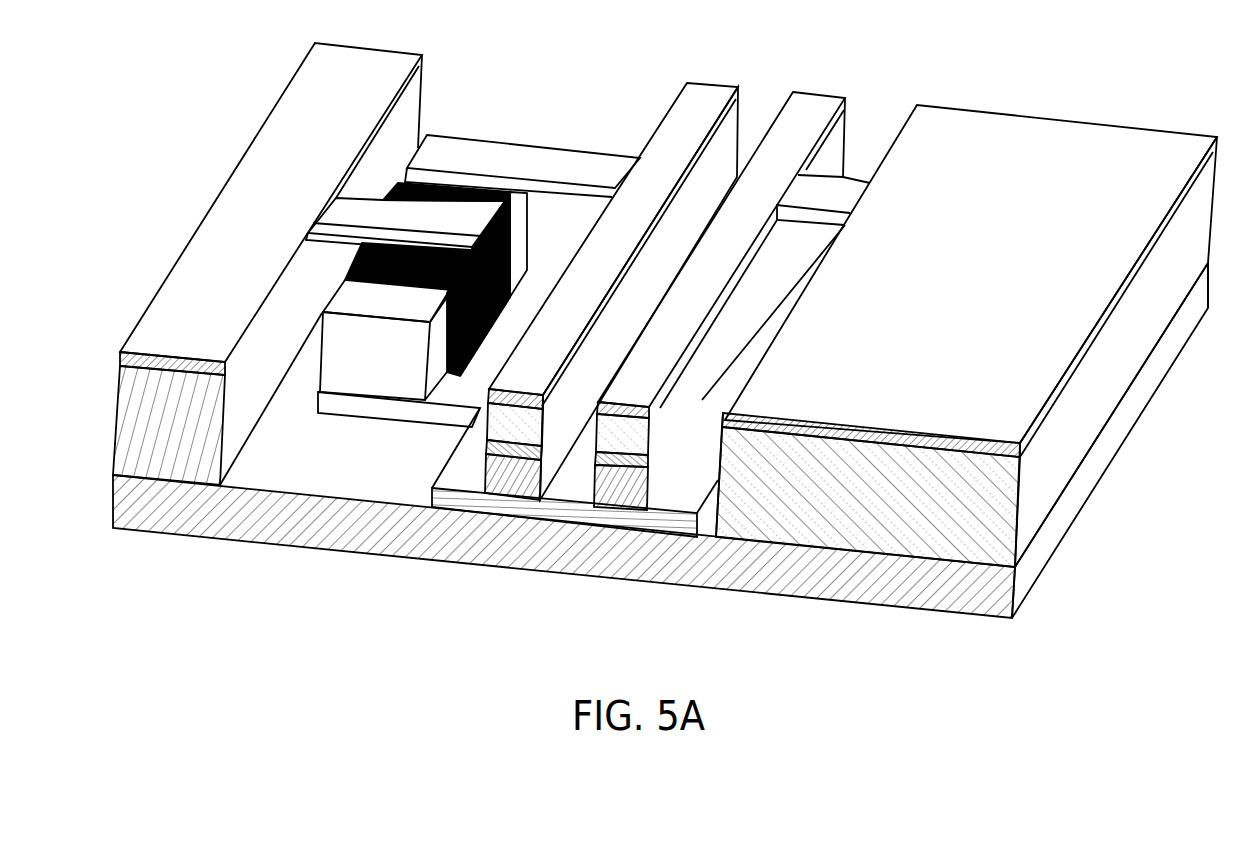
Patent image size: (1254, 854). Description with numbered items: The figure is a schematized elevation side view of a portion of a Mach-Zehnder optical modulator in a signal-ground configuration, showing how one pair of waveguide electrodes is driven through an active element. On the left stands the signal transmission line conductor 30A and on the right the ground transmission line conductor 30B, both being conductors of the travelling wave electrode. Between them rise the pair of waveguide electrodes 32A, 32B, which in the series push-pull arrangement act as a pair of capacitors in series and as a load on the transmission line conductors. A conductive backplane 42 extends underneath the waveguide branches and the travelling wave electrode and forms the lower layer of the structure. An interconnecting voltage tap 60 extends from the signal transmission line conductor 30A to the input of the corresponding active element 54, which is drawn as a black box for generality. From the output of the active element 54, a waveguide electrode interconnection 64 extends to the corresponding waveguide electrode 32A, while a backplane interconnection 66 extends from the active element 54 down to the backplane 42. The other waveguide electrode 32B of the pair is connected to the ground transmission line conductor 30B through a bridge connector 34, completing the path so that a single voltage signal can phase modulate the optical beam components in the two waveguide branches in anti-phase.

The signal transmission line conductor 30A is at (268, 114).
The ground transmission line conductor 30B is at (1100, 123).
The waveguide electrode 32A is at (712, 82).
The waveguide electrode 32B is at (820, 90).
The bridge connector 34 is at (862, 180).
The conductive backplane 42 is at (567, 510).
The active element 54 is at (373, 268).
The interconnecting voltage tap 60 is at (400, 222).
The waveguide electrode interconnection 64 is at (462, 152).
The backplane interconnection 66 is at (405, 378).